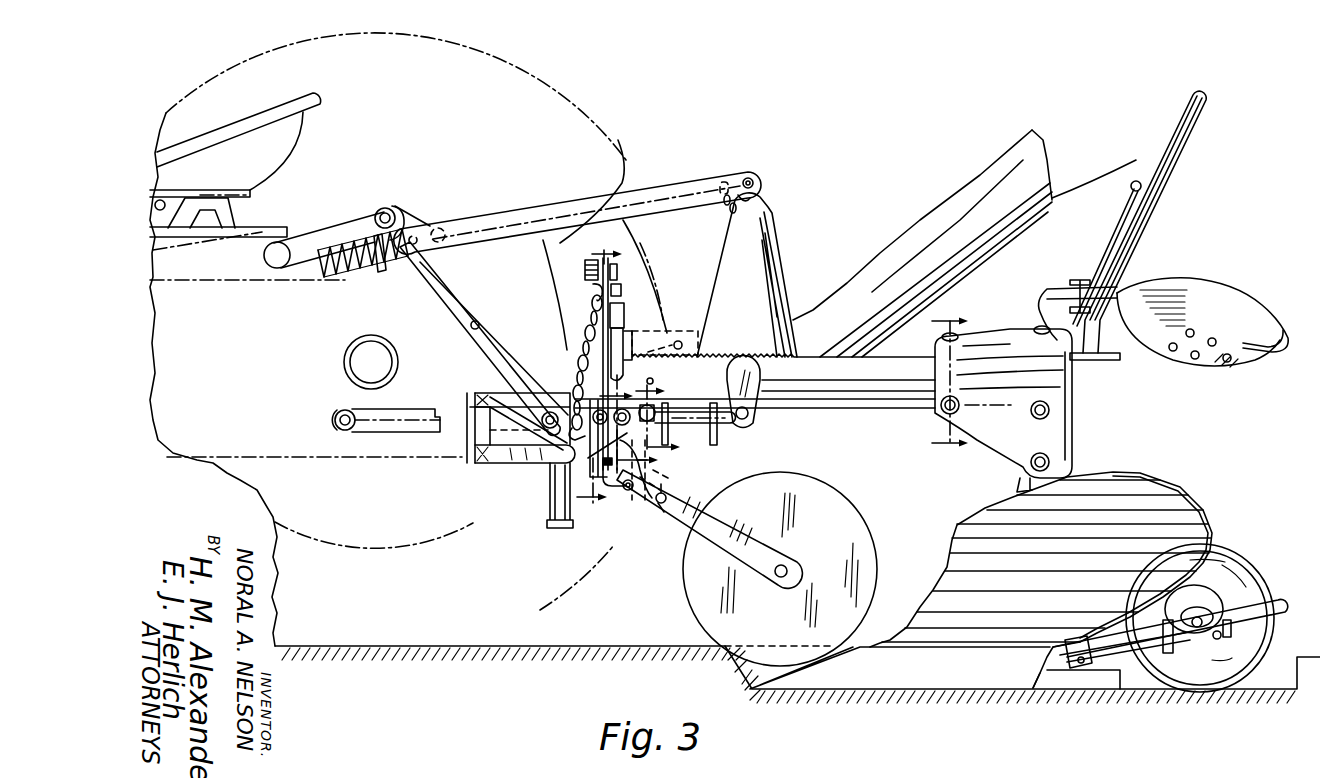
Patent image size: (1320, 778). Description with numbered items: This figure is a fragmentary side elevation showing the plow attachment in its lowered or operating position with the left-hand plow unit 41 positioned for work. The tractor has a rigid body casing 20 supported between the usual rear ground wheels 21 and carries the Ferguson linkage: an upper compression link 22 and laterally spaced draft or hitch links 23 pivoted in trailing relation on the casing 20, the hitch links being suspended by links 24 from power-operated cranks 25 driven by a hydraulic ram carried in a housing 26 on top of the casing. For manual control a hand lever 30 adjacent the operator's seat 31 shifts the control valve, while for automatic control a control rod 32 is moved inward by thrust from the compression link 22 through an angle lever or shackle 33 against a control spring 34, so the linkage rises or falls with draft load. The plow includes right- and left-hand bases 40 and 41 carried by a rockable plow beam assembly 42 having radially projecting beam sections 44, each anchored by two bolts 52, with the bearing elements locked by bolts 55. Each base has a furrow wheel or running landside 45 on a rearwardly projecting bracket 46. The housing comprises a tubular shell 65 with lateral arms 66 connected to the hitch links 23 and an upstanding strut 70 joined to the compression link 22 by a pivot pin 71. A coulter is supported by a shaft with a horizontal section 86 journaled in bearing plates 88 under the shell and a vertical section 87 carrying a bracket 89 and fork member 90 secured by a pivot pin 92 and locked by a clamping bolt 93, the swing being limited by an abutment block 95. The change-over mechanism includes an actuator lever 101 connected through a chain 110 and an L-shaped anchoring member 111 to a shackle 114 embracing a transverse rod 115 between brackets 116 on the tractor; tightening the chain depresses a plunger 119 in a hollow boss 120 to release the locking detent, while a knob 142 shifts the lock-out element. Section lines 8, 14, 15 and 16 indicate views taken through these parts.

The section line 8- 8 is at (599, 379).
The section line 14- 14 is at (640, 424).
The section line 15- 15 is at (669, 418).
The section line 16- 16 is at (954, 381).
The body casing 20 is at (400, 463).
The rear ground wheels 21 is at (548, 610).
The upper compression link 22 is at (563, 205).
The draft or hitch links 23 is at (558, 397).
The links 24 is at (460, 288).
The power-operated cranks 25 is at (333, 222).
The housing 26 is at (245, 245).
The hand lever 30 is at (180, 193).
The operator's seat 31 is at (262, 118).
The control rod 32 is at (357, 267).
The angle lever or shackle 33 is at (427, 220).
The control spring 34 is at (373, 272).
The right-hand plow unit or base 40 is at (997, 136).
The left-hand plow unit or base 41 is at (1185, 479).
The plow beam assembly 42 is at (1080, 387).
The beam sections 44 is at (1023, 480).
The furrow wheel or running landside 45 is at (1225, 297).
The bracket 46 is at (1122, 281).
The bolts 52 is at (1050, 458).
The bolts 55 is at (938, 411).
The tubular shell 65 is at (824, 402).
The rigid arms 66 is at (757, 373).
The strut 70 is at (778, 245).
The pivot pin 71 is at (760, 177).
The horizontal shaft section 86 is at (737, 433).
The vertical shaft section 87 is at (642, 507).
The bearing plates 88 is at (716, 440).
The bracket 89 is at (598, 458).
The fork member 90 is at (720, 523).
The pivot pin 92 is at (623, 497).
The clamping bolt 93 is at (661, 505).
The abutment block 95 is at (850, 513).
The actuator lever 101 is at (610, 277).
The flexible member or chain 110 is at (580, 328).
The L-shaped anchoring member 111 is at (592, 290).
The shackle or stirrup 114 is at (553, 530).
The transverse rod 115 is at (540, 470).
The brackets 116 is at (493, 460).
The plunger 119 is at (621, 300).
The hollow boss 120 is at (625, 318).
The knob 142 is at (585, 268).